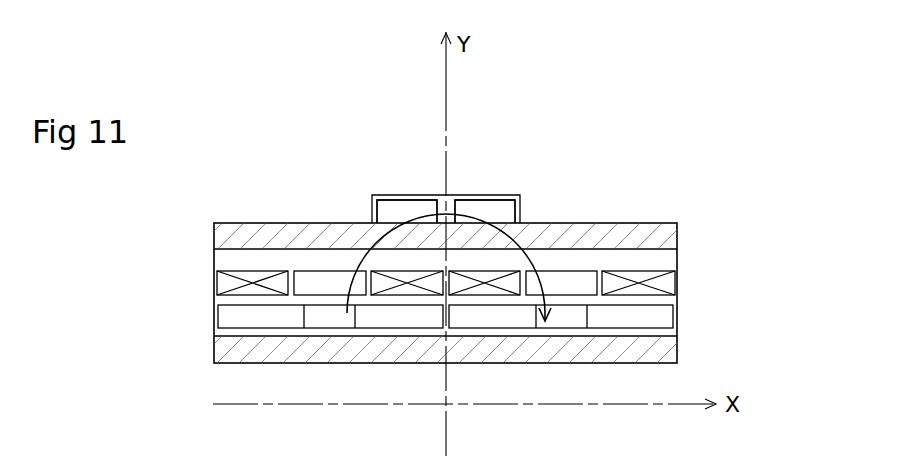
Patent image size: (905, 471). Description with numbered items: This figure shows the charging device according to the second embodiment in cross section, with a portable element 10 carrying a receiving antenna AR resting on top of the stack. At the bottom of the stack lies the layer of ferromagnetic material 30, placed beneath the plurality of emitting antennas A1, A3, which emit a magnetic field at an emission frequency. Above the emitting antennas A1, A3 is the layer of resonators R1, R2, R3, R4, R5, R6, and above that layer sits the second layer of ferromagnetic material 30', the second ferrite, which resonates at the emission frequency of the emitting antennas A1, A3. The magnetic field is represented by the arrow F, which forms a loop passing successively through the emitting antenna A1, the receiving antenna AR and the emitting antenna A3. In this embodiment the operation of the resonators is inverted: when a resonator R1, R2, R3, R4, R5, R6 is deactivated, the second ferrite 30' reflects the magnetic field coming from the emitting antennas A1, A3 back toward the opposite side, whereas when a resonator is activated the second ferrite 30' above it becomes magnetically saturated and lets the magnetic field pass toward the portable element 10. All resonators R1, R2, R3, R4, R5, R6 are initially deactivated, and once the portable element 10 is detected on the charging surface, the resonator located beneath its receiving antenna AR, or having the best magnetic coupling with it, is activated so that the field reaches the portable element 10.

The portable element 10 is at (407, 195).
The receiving antenna AR is at (505, 208).
The arrow F is at (533, 250).
The resonator R1 is at (223, 282).
The resonator R2 is at (315, 283).
The resonator R3 is at (390, 283).
The resonator R4 is at (506, 283).
The resonator R5 is at (583, 283).
The resonator R6 is at (665, 287).
The emitting antenna A1 is at (223, 313).
The emitting antenna A3 is at (668, 313).
The layer of ferromagnetic material 30 is at (501, 351).
The second layer of ferromagnetic material 30' is at (504, 221).